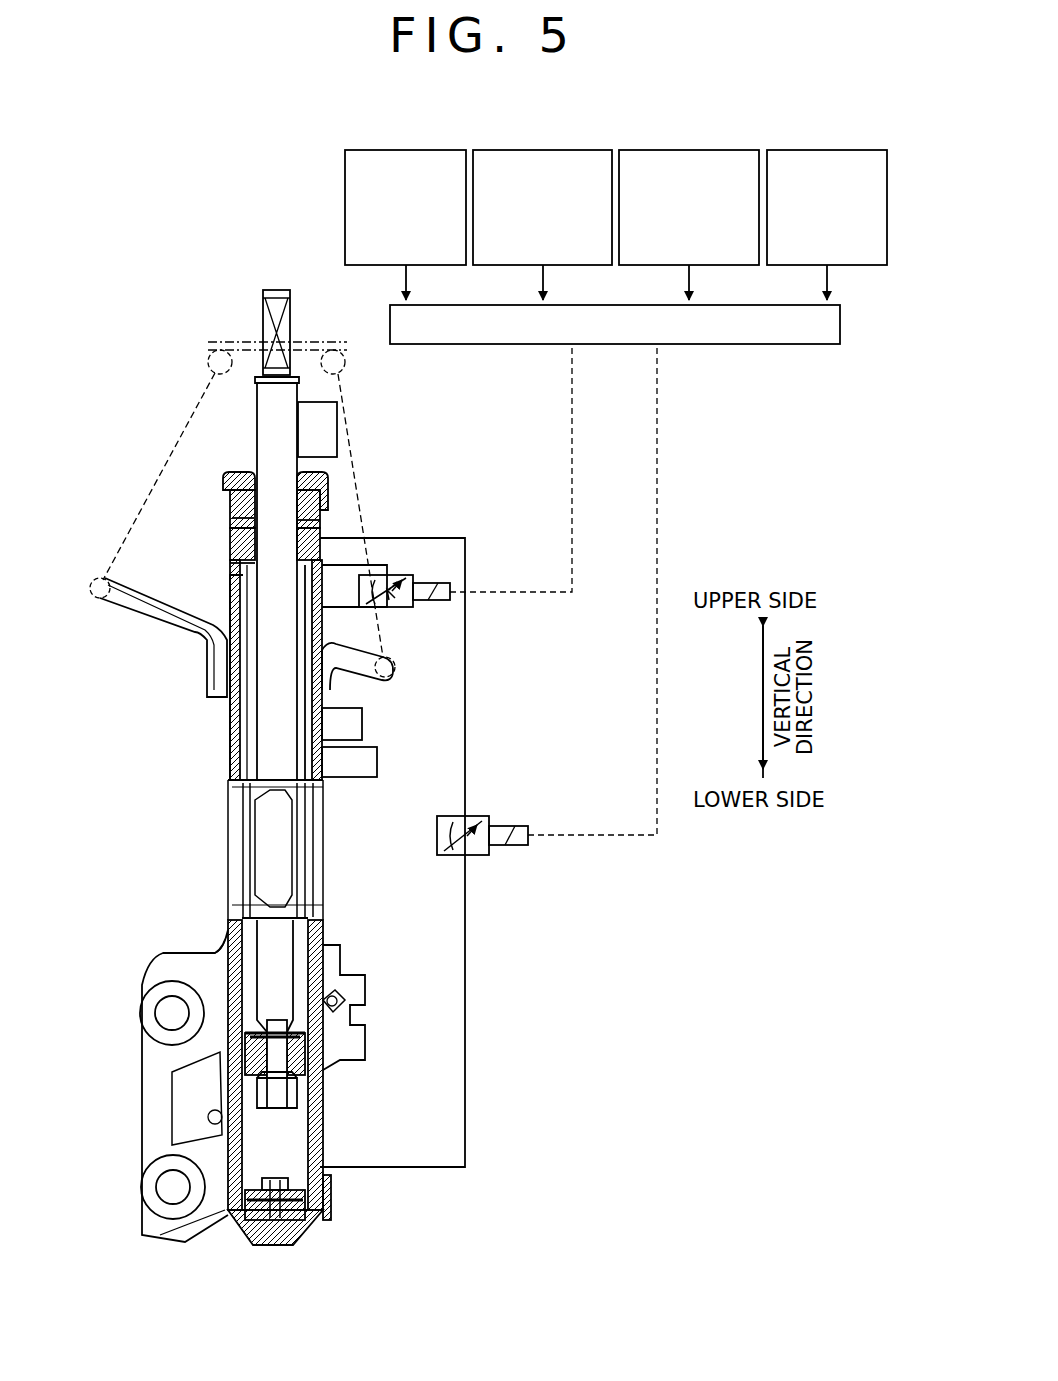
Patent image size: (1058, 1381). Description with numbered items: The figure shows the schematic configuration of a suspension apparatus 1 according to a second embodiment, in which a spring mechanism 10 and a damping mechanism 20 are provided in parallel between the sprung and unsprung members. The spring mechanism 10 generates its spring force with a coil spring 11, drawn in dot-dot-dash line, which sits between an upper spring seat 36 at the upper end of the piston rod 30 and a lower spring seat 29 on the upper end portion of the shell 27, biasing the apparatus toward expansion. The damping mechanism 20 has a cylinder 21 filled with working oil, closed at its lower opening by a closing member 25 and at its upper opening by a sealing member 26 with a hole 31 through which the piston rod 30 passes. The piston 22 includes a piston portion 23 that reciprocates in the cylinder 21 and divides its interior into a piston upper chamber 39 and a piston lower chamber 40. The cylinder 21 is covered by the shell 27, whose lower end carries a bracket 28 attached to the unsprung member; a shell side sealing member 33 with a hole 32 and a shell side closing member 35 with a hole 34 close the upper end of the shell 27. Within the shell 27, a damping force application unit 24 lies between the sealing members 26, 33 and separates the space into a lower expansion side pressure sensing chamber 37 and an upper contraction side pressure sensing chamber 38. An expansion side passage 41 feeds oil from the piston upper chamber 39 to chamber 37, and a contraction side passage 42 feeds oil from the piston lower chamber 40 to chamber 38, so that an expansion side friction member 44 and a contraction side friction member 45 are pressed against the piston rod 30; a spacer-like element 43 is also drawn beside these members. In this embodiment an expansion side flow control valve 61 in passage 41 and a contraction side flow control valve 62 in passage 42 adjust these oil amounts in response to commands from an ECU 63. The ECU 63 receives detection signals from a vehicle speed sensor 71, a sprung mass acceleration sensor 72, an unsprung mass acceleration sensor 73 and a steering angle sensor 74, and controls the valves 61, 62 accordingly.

The suspension apparatus 1 is at (133, 286).
The spring mechanism 10 is at (353, 428).
The coil spring 11 is at (337, 403).
The damping mechanism 20 is at (150, 678).
The cylinder 21 is at (330, 778).
The piston 22 is at (318, 747).
The piston portion 23 is at (300, 1060).
The damping force application unit 24 is at (228, 545).
The closing member 25 is at (290, 1206).
The sealing member 26 is at (243, 575).
The shell 27 is at (322, 715).
The bracket 28 is at (197, 1232).
The lower spring seat 29 is at (405, 670).
The piston rod 30 is at (272, 758).
The hole 31 is at (260, 640).
The hole 32 is at (245, 491).
The shell side sealing member 33 is at (240, 500).
The hole 34 is at (290, 480).
The shell side closing member 35 is at (323, 498).
The upper spring seat 36 is at (220, 338).
The expansion side pressure sensing chamber 37 is at (308, 563).
The contraction side pressure sensing chamber 38 is at (241, 541).
The piston upper chamber 39 is at (245, 705).
The piston lower chamber 40 is at (277, 1137).
The expansion side passage 41 is at (390, 575).
The contraction side passage 42 is at (465, 1100).
The spacer 43 is at (310, 540).
The expansion side friction member 44 is at (242, 556).
The contraction side friction member 45 is at (242, 517).
The expansion side flow control valve 61 is at (405, 607).
The contraction side flow control valve 62 is at (470, 817).
The ECU 63 is at (840, 320).
The vehicle speed sensor 71 is at (428, 148).
The sprung mass acceleration sensor 72 is at (578, 148).
The unsprung mass acceleration sensor 73 is at (721, 148).
The steering angle sensor 74 is at (849, 148).